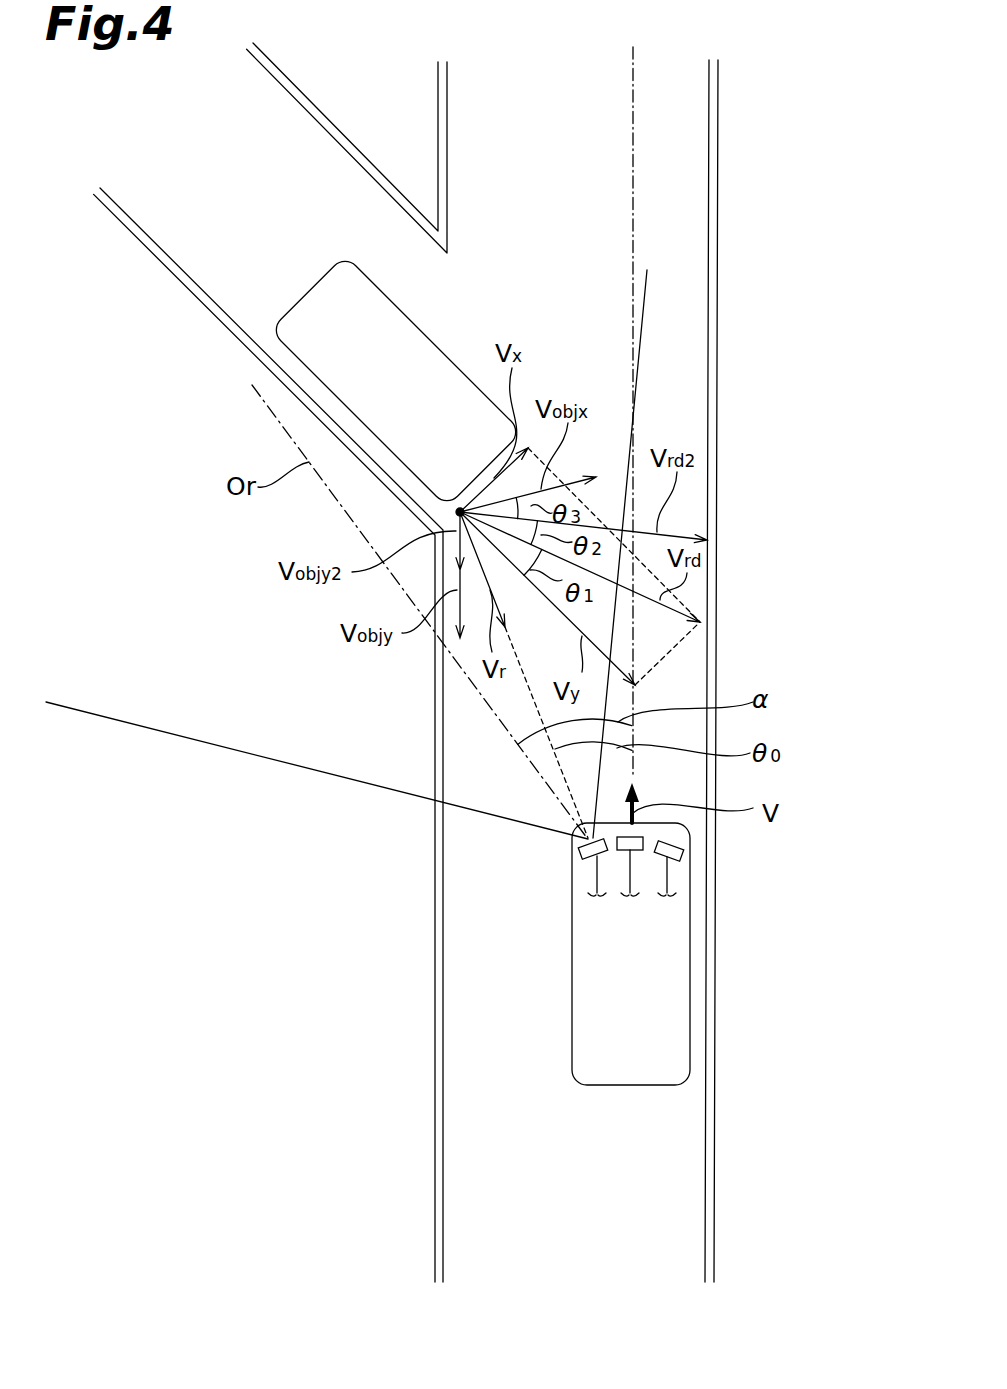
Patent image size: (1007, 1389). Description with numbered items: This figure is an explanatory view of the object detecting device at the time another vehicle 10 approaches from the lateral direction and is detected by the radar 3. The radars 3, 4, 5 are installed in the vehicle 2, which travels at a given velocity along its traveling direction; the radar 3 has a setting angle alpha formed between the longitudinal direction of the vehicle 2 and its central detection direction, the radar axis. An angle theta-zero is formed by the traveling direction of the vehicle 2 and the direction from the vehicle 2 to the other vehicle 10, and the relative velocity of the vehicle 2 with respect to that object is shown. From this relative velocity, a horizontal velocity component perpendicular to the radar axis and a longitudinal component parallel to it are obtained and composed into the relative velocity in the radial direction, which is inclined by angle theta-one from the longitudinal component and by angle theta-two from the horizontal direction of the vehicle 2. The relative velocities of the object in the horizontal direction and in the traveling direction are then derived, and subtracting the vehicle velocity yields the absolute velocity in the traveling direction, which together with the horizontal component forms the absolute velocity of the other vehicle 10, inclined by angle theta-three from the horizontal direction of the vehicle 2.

The vehicle 2 is at (693, 990).
The radar 3 is at (572, 847).
The radar 4 is at (640, 851).
The radar 5 is at (684, 848).
The another vehicle 10 is at (298, 297).